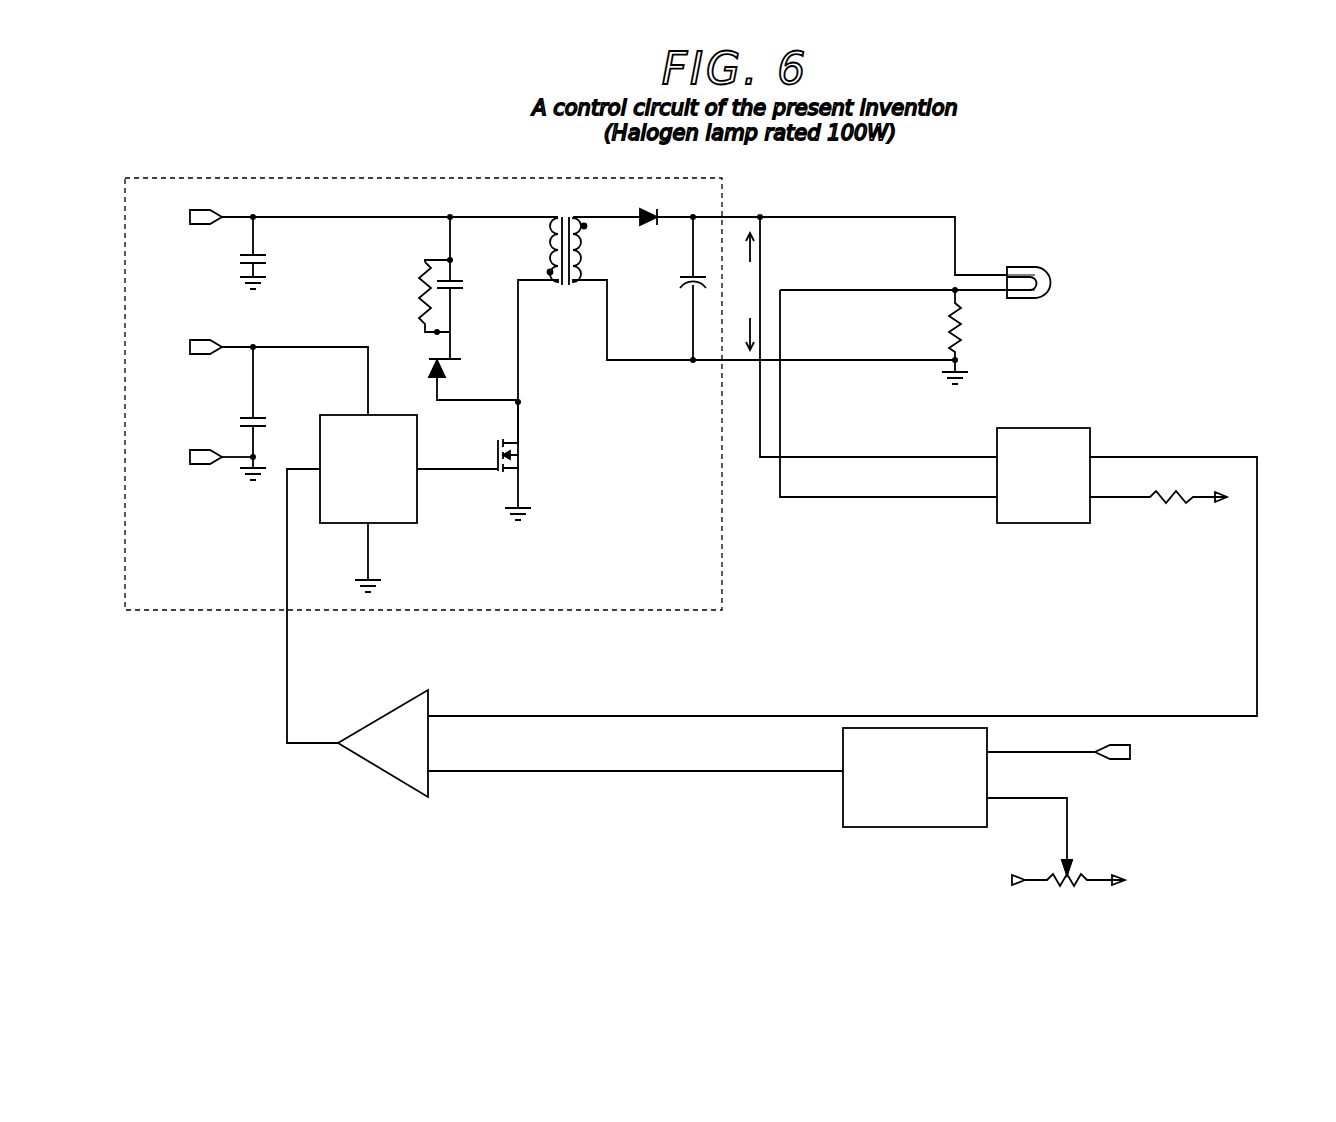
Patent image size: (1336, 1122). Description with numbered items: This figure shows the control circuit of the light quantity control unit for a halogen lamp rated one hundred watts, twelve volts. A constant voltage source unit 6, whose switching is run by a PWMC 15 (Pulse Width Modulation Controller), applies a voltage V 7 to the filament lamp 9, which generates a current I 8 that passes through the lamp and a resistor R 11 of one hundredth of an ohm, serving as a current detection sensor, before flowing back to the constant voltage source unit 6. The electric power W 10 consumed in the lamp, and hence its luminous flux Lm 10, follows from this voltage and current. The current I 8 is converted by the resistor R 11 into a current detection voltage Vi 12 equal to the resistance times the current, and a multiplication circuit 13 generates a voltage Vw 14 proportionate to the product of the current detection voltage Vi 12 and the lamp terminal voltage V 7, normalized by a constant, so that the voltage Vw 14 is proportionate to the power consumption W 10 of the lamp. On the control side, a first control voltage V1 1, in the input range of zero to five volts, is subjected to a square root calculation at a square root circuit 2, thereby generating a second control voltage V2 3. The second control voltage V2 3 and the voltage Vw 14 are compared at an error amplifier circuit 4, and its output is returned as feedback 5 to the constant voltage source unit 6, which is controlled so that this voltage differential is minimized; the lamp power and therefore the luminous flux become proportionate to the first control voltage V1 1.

The first control voltage V1 1 is at (1108, 763).
The square root circuit 2 is at (978, 817).
The second control voltage V2 3 is at (635, 759).
The error amplifier circuit 4 is at (369, 771).
The feedback 5 is at (336, 606).
The constant voltage source unit 6 is at (540, 383).
The voltage V 7 is at (861, 337).
The current I 8 is at (883, 274).
The filament lamp 9 is at (968, 261).
The electric power W / luminous flux Lm 10 is at (1124, 295).
The current detection resistor R 11 is at (907, 299).
The current detection voltage Vi 12 is at (867, 415).
The multiplication circuit 13 is at (1105, 492).
The voltage Vw 14 is at (842, 574).
The PWMC 15 is at (409, 494).